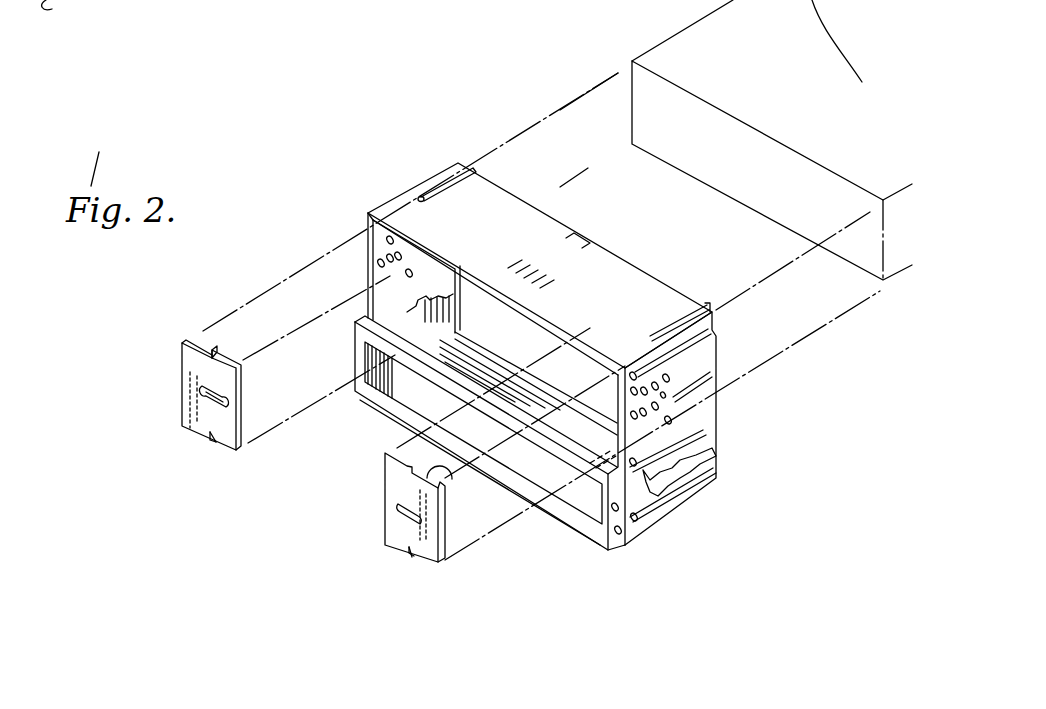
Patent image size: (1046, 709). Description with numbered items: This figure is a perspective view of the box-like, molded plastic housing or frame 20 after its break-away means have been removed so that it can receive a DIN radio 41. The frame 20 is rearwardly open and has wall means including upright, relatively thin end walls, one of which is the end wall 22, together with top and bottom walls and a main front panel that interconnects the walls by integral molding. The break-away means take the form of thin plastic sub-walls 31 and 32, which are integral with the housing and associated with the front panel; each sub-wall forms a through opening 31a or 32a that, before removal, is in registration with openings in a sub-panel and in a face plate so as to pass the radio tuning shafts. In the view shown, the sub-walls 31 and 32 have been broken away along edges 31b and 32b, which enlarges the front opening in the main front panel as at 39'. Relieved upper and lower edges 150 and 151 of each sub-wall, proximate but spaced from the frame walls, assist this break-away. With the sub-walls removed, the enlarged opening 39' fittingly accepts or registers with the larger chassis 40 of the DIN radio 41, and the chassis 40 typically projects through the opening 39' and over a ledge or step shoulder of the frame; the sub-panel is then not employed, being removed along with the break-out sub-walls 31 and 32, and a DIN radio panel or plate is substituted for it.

The housing or frame 20 is at (404, 176).
The end wall 22 is at (705, 397).
The sub-wall 31 is at (182, 356).
The through opening 31a is at (203, 393).
The broken-away edge 31b is at (368, 267).
The sub-wall 32 is at (402, 538).
The through opening 32a is at (397, 512).
The broken-away edge 32b is at (612, 378).
The enlarged opening 39' is at (449, 267).
The chassis 40 is at (688, 158).
The DIN radio 41 is at (668, 26).
The relieved upper edge 150 is at (203, 340).
The relieved lower edge 151 is at (183, 432).